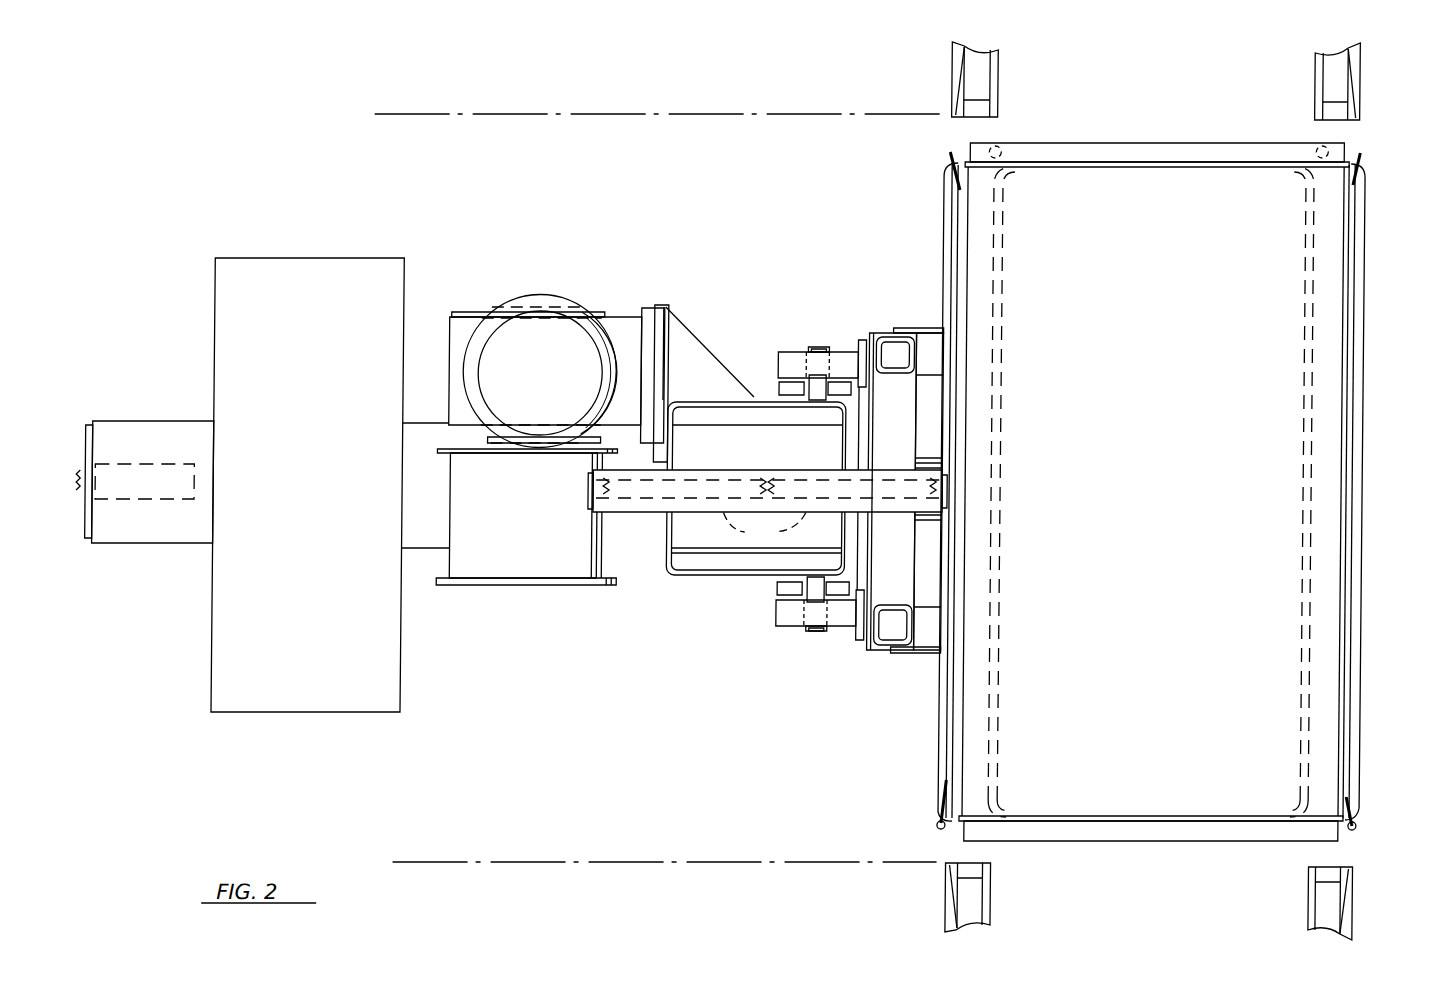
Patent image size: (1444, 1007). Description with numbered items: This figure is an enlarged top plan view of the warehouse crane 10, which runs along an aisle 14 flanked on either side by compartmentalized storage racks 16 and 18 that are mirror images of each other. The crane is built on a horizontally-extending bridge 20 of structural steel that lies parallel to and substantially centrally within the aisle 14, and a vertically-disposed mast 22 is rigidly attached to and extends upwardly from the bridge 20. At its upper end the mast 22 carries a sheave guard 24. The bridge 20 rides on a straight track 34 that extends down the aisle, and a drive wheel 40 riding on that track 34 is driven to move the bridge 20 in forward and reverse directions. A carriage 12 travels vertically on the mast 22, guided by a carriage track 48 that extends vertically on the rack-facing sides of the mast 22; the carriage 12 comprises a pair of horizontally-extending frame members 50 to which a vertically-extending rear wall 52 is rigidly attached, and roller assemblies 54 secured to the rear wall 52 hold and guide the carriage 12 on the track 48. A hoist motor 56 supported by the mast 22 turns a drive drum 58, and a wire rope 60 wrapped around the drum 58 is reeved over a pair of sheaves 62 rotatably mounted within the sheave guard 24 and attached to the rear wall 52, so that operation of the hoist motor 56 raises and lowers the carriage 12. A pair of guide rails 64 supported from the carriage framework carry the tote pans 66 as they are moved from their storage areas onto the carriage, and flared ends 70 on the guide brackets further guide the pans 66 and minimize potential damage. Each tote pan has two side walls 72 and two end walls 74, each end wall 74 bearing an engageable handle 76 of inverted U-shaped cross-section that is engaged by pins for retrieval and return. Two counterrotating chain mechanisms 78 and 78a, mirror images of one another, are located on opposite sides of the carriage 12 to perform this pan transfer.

The warehouse crane 10 is at (406, 742).
The carriage 12 is at (906, 656).
The aisle 14 is at (556, 716).
The storage rack 16 is at (661, 81).
The storage rack 18 is at (694, 899).
The bridge 20 is at (172, 545).
The mast 22 is at (707, 580).
The sheave guard 24 is at (640, 512).
The track 34 is at (77, 476).
The drive wheel 40 is at (152, 502).
The carriage track 48 is at (815, 387).
The frame members 50 is at (930, 340).
The rear wall 52 is at (908, 421).
The roller assemblies 54 is at (833, 346).
The hoist motor 56 is at (597, 347).
The drive drum 58 is at (507, 585).
The wire rope 60 is at (592, 490).
The sheaves 62 is at (765, 522).
The guide rails 64 is at (950, 765).
The tote pans 66 is at (1142, 488).
The flared ends 70 is at (947, 156).
The side walls 72 is at (947, 217).
The end walls 74 is at (1111, 160).
The handle 76 is at (1210, 118).
The chain mechanism 78 is at (1368, 736).
The chain mechanism 78a is at (938, 733).